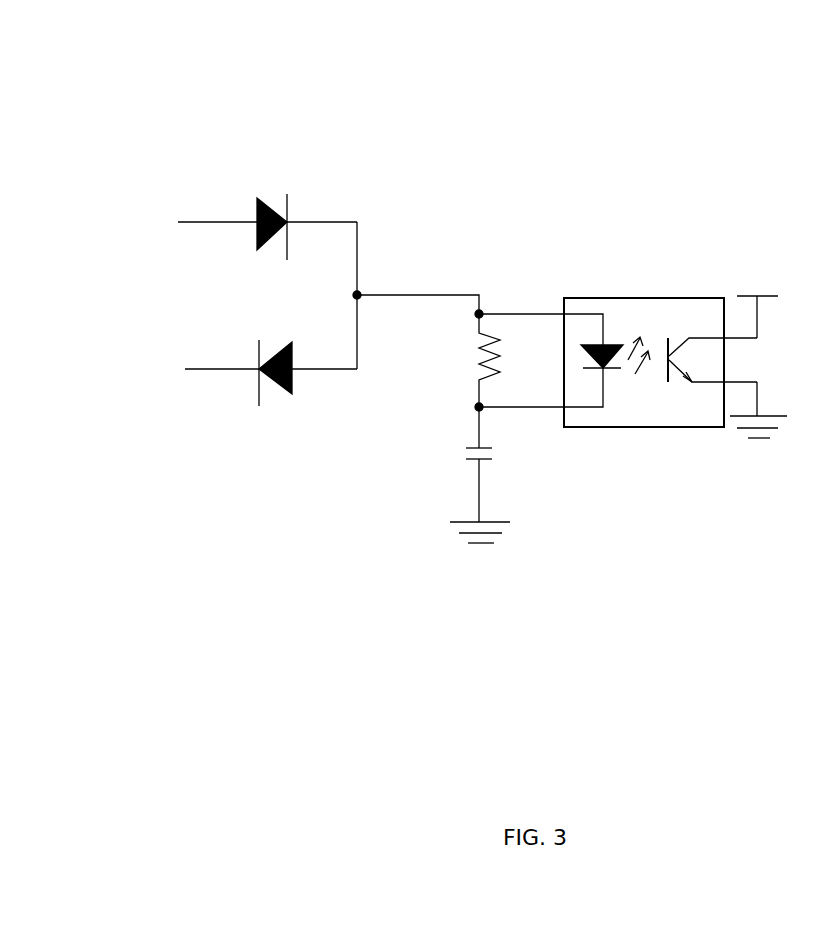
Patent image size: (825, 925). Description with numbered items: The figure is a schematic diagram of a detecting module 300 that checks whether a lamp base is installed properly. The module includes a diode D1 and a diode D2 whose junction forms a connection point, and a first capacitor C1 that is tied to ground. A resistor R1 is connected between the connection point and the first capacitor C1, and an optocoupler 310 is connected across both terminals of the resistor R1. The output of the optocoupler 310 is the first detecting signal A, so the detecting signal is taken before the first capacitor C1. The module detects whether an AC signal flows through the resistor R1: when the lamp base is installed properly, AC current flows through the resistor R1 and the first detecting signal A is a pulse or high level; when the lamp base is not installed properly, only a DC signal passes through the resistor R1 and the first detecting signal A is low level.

The detecting module 300 is at (224, 128).
The optocoupler 310 is at (684, 282).
The diode D1 is at (267, 213).
The diode D2 is at (271, 359).
The resistor R1 is at (467, 360).
The first capacitor C1 is at (464, 475).
The first detecting signal A is at (757, 302).